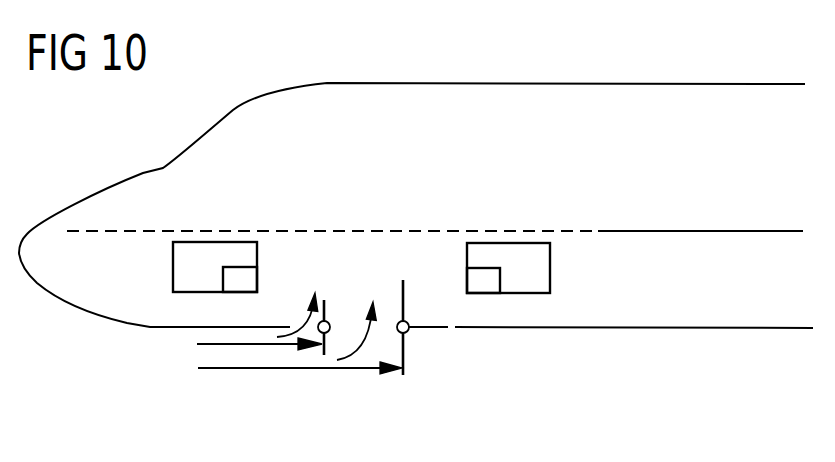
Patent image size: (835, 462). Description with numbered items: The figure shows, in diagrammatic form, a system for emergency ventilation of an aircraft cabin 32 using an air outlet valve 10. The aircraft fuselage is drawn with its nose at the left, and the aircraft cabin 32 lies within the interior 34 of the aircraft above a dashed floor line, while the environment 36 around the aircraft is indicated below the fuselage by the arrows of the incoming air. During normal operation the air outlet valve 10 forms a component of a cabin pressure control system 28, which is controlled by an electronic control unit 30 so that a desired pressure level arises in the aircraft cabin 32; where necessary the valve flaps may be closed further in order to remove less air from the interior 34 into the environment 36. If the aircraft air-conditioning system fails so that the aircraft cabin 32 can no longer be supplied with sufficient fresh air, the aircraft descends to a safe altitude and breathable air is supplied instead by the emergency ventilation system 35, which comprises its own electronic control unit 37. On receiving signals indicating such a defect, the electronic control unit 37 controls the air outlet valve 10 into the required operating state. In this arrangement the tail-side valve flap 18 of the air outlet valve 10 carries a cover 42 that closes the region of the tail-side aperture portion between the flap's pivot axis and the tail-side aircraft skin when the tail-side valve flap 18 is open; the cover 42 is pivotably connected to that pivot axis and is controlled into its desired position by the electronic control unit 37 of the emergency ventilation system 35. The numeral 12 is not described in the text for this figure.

The air outlet valve 10 is at (455, 372).
The first valve 12 is at (337, 297).
The tail-side valve flap 18 is at (405, 297).
The cabin pressure control system 28 is at (196, 250).
The electronic control unit 30 is at (248, 280).
The aircraft cabin 32 is at (645, 188).
The interior of the aircraft 34 is at (362, 223).
The emergency ventilation system 35 is at (523, 252).
The environment 36 is at (153, 380).
The electronic control unit 37 is at (478, 277).
The cover 42 is at (440, 332).